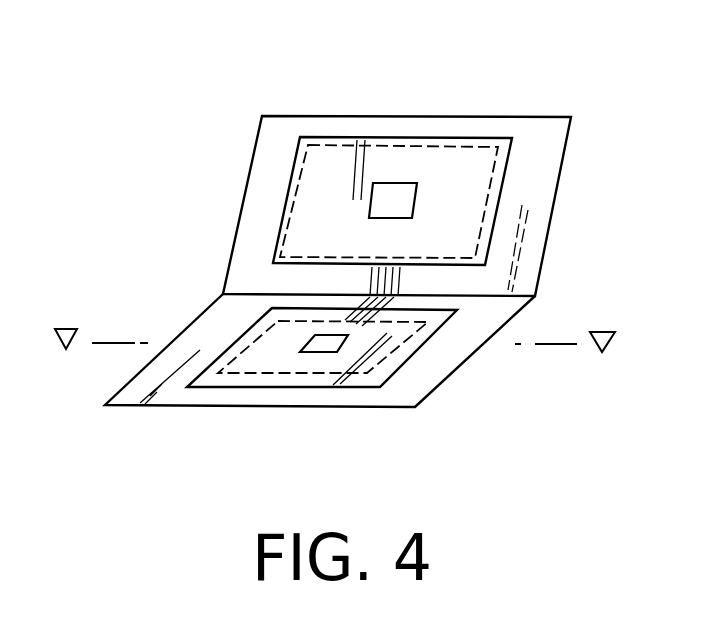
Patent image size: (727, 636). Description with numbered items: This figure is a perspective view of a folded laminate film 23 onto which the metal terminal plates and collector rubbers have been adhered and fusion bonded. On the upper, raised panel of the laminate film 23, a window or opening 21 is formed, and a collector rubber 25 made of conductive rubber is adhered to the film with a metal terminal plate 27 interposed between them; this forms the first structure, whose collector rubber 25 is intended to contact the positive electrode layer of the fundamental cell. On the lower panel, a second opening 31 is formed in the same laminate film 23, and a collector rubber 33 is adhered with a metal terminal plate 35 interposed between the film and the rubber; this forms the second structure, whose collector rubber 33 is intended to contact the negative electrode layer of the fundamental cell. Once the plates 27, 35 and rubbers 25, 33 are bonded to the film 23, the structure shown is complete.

The opening 21 is at (370, 200).
The laminate film 23 is at (557, 207).
The collector rubber 25 is at (478, 137).
The metal terminal plate 27 is at (407, 143).
The opening 31 is at (310, 353).
The collector rubber 33 is at (410, 338).
The metal terminal plate 35 is at (403, 343).